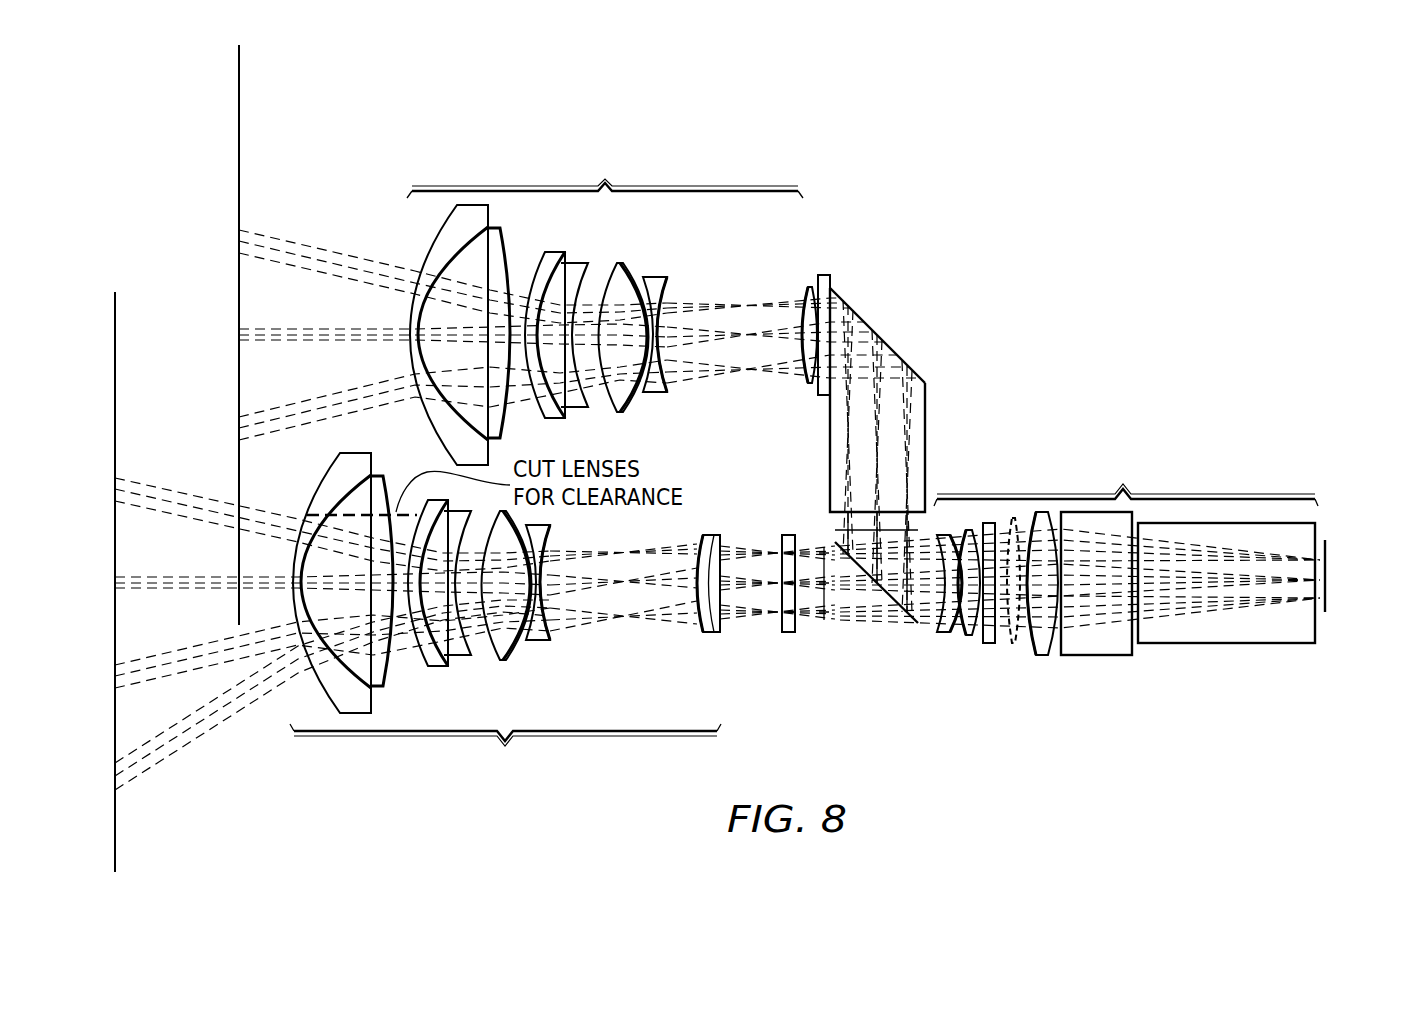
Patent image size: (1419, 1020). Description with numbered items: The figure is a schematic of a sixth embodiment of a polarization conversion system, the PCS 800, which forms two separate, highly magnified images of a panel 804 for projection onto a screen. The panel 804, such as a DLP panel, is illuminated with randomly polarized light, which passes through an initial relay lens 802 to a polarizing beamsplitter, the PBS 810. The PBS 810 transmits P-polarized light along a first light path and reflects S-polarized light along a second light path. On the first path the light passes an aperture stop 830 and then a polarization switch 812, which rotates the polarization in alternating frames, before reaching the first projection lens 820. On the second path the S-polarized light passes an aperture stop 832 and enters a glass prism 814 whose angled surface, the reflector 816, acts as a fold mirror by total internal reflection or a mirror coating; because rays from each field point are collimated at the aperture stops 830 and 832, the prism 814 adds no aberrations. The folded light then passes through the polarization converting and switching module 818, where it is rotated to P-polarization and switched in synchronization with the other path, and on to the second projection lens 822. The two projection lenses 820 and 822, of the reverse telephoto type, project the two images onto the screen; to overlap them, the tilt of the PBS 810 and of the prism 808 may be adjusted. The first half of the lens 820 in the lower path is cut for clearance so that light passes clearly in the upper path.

The PCS 800 is at (1095, 204).
The initial relay lens 802 is at (1126, 555).
The panel 804 is at (1326, 606).
The prism 808 is at (908, 462).
The PBS 810 is at (900, 625).
The polarization switch 812 is at (788, 633).
The glass prism 814 is at (926, 412).
The reflector 816 is at (893, 352).
The polarization converting and switching module 818 is at (826, 275).
The first projection lens 820 is at (505, 615).
The second projection lens 822 is at (605, 307).
The aperture stop 830 is at (824, 597).
The aperture stop 832 is at (842, 530).